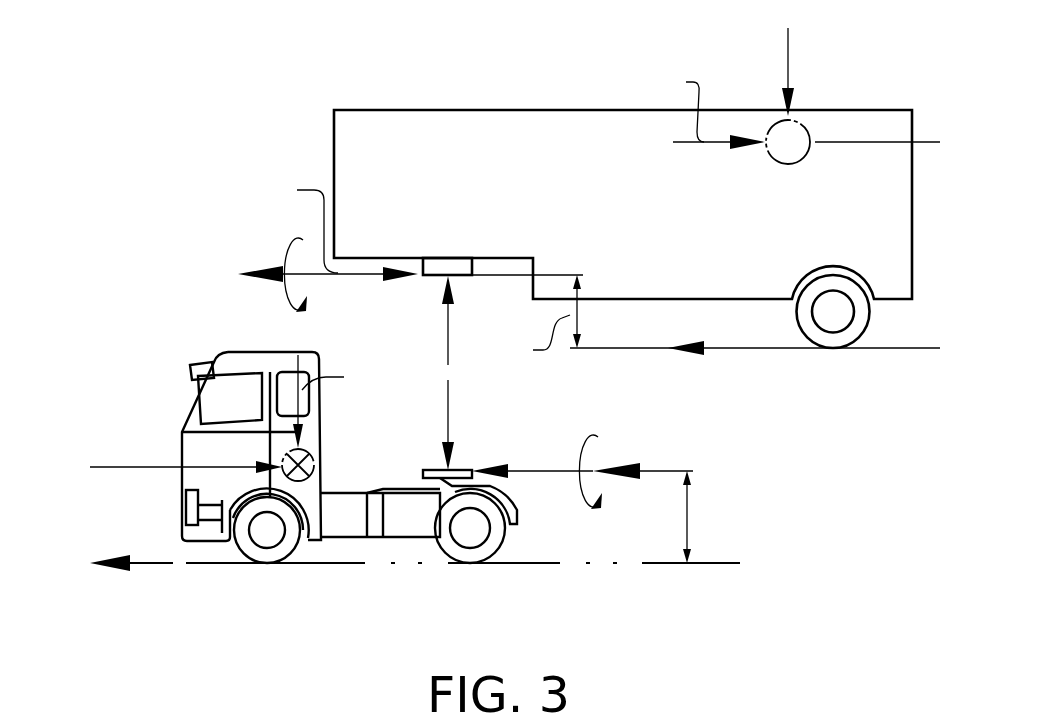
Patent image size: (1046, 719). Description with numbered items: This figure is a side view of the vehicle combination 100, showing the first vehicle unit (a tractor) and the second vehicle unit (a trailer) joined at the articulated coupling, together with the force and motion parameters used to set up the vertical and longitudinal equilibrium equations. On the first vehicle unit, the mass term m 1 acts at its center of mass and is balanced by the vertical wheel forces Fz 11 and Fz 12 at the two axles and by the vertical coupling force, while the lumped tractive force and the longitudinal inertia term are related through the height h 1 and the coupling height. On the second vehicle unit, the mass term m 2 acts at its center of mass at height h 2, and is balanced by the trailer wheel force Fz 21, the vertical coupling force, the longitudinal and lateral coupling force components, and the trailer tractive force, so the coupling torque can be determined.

The vehicle combination 100 is at (310, 62).
The tractor unit 1 is at (391, 465).
The trailer 2 is at (518, 234).
The tractor front wheel 11 is at (267, 655).
The tractor rear wheel 12 is at (470, 655).
The trailer wheel 21 is at (833, 440).